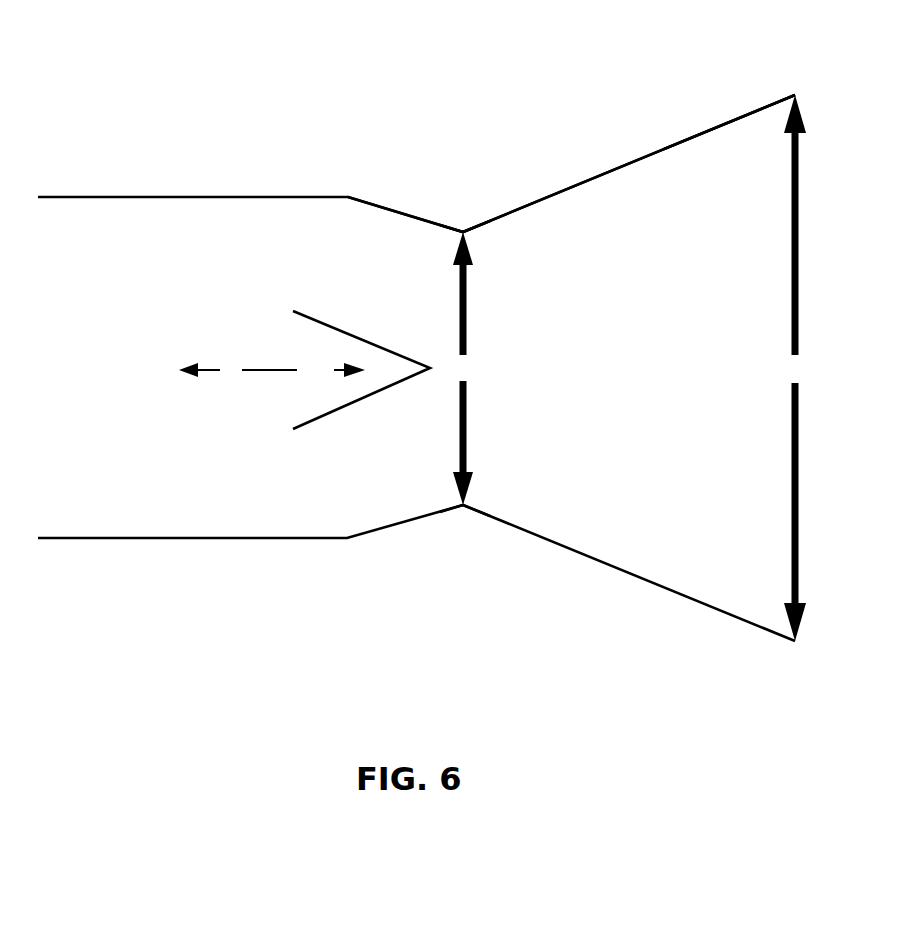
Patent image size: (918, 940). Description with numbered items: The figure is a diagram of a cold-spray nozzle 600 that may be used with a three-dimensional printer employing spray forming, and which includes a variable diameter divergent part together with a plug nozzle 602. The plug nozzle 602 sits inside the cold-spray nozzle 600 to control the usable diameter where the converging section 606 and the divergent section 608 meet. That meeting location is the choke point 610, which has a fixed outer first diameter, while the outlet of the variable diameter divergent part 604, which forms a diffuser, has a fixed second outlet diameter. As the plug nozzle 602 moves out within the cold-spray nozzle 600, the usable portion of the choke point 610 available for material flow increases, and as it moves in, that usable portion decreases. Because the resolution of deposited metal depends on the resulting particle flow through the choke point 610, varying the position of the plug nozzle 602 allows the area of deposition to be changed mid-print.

The cold-spray nozzle 600 is at (176, 68).
The plug nozzle 602 is at (336, 320).
The variable diameter divergent part 604 is at (546, 140).
The converging section 606 is at (394, 188).
The divergent section 608 is at (655, 105).
The choke point 610 is at (463, 505).